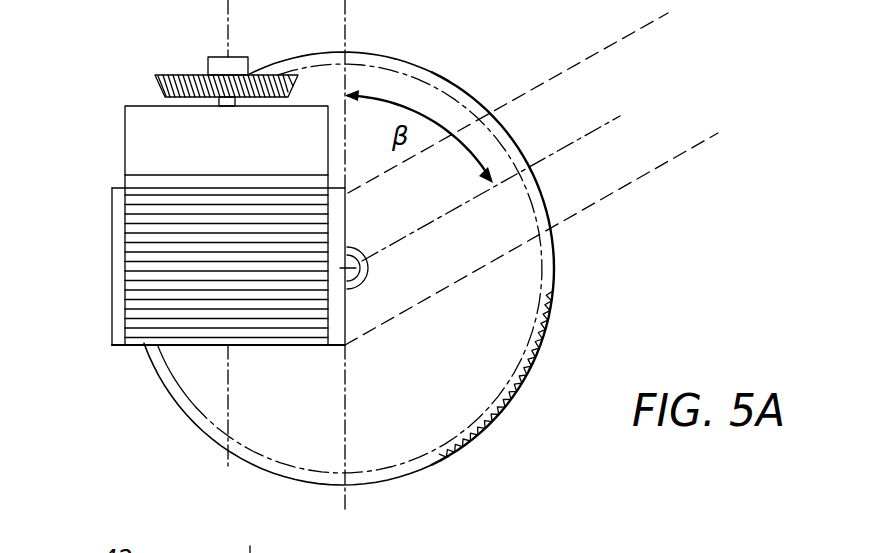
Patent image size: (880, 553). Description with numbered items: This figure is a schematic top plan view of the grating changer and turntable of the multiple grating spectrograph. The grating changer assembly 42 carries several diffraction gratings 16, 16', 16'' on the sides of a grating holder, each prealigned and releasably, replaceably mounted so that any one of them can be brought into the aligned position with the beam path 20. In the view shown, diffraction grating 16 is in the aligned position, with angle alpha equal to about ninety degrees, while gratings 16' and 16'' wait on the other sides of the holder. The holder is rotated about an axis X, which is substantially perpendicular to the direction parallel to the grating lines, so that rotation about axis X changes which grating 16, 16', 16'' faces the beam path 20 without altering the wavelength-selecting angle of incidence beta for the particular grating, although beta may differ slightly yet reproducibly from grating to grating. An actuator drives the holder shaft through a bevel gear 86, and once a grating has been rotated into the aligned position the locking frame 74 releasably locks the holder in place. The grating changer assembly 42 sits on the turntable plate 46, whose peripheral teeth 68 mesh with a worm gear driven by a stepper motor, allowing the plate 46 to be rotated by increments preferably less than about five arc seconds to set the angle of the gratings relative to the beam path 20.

The diffraction grating 16 is at (210, 303).
The diffraction grating 16' is at (228, 369).
The diffraction grating 16'' is at (83, 266).
The beam path 20 is at (634, 109).
The grating changer assembly 42 is at (133, 94).
The plate 46 is at (467, 374).
The teeth 68 is at (525, 381).
The locking frame 74 is at (147, 147).
The bevel gear 86 is at (156, 86).
The axis X is at (226, 463).